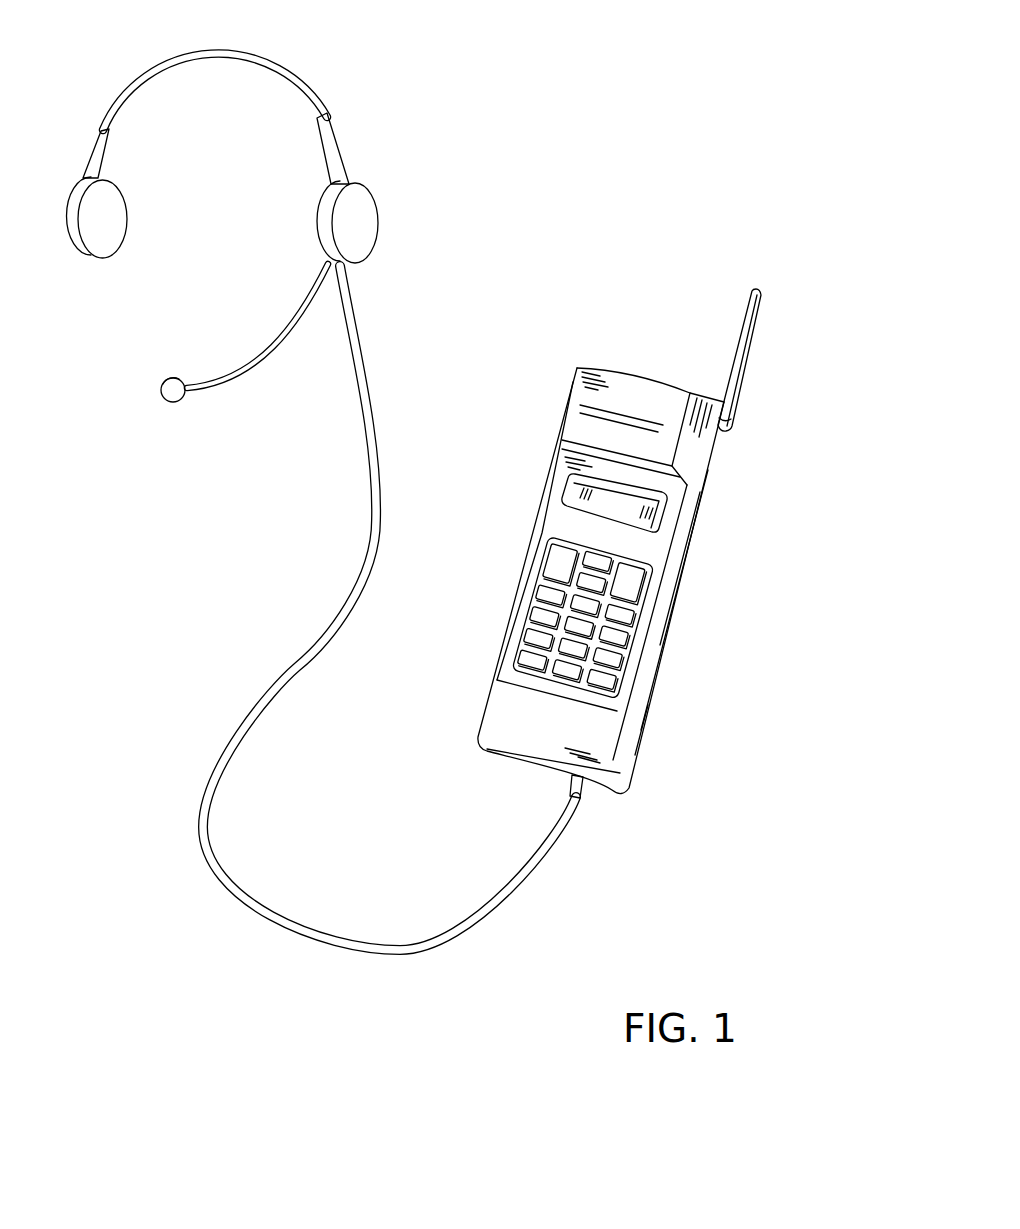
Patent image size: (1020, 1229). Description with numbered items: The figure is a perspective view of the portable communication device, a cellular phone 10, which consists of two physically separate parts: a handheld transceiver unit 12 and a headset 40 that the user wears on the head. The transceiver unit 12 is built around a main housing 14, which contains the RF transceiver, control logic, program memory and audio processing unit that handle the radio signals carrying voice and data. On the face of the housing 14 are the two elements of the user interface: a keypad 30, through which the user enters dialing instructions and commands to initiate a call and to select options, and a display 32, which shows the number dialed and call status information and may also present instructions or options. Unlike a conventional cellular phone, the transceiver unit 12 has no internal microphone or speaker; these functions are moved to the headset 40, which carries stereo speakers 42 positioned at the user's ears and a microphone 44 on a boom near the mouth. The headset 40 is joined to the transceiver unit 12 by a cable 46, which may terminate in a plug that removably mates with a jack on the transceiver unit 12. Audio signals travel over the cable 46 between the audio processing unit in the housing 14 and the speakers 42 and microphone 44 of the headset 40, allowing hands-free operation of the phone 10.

The cellular phone 10 is at (700, 138).
The transceiver unit 12 is at (709, 709).
The main housing 14 is at (642, 378).
The keypad 30 is at (640, 637).
The display 32 is at (650, 513).
The headset 40 is at (392, 96).
The stereo speakers 42 is at (363, 228).
The microphone 44 is at (177, 400).
The cable 46 is at (260, 707).